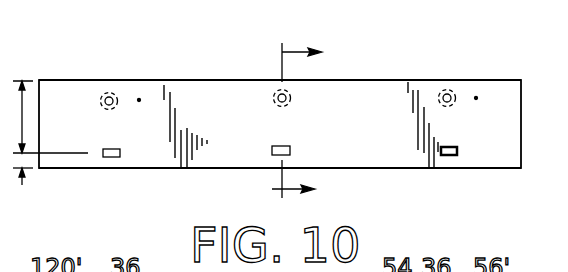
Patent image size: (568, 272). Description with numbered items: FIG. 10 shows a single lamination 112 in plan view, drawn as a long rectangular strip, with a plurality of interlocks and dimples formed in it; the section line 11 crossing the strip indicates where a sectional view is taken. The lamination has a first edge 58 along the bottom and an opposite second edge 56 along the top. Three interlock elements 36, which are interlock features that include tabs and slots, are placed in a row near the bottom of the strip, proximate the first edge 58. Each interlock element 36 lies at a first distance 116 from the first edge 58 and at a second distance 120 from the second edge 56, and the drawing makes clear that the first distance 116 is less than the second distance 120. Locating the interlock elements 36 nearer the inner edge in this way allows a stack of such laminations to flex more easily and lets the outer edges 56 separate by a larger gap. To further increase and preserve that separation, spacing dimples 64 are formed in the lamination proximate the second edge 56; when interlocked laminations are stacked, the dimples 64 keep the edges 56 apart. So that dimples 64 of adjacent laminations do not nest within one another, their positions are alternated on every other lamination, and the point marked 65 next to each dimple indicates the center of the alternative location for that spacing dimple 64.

The plate 112 is at (372, 131).
The second edge 56 is at (496, 80).
The first edge 58 is at (105, 169).
The spacing dimples 64 is at (108, 96).
The center of alternative dimple locations 65 is at (140, 99).
The interlock elements 36 is at (110, 149).
The second distance 120 is at (22, 120).
The first distance 116 is at (24, 173).
The section line 11 is at (316, 119).